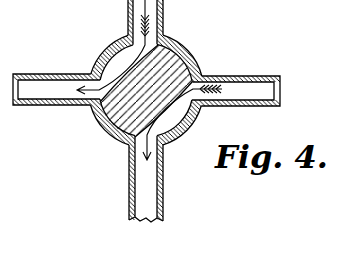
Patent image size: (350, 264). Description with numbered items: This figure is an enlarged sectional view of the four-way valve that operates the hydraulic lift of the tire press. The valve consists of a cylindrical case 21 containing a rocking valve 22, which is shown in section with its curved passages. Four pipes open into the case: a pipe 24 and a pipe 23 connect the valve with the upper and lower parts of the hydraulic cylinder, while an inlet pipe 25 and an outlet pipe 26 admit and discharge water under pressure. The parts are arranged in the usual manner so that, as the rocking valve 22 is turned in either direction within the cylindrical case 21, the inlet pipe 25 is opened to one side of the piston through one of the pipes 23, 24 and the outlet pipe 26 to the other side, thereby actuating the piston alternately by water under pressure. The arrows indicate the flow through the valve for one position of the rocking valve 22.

The cylindrical case 21 is at (175, 132).
The rocking valve 22 is at (101, 132).
The pipe 23 is at (130, 179).
The pipe 24 is at (134, 22).
The inlet pipe 25 is at (236, 80).
The outlet pipe 26 is at (56, 80).